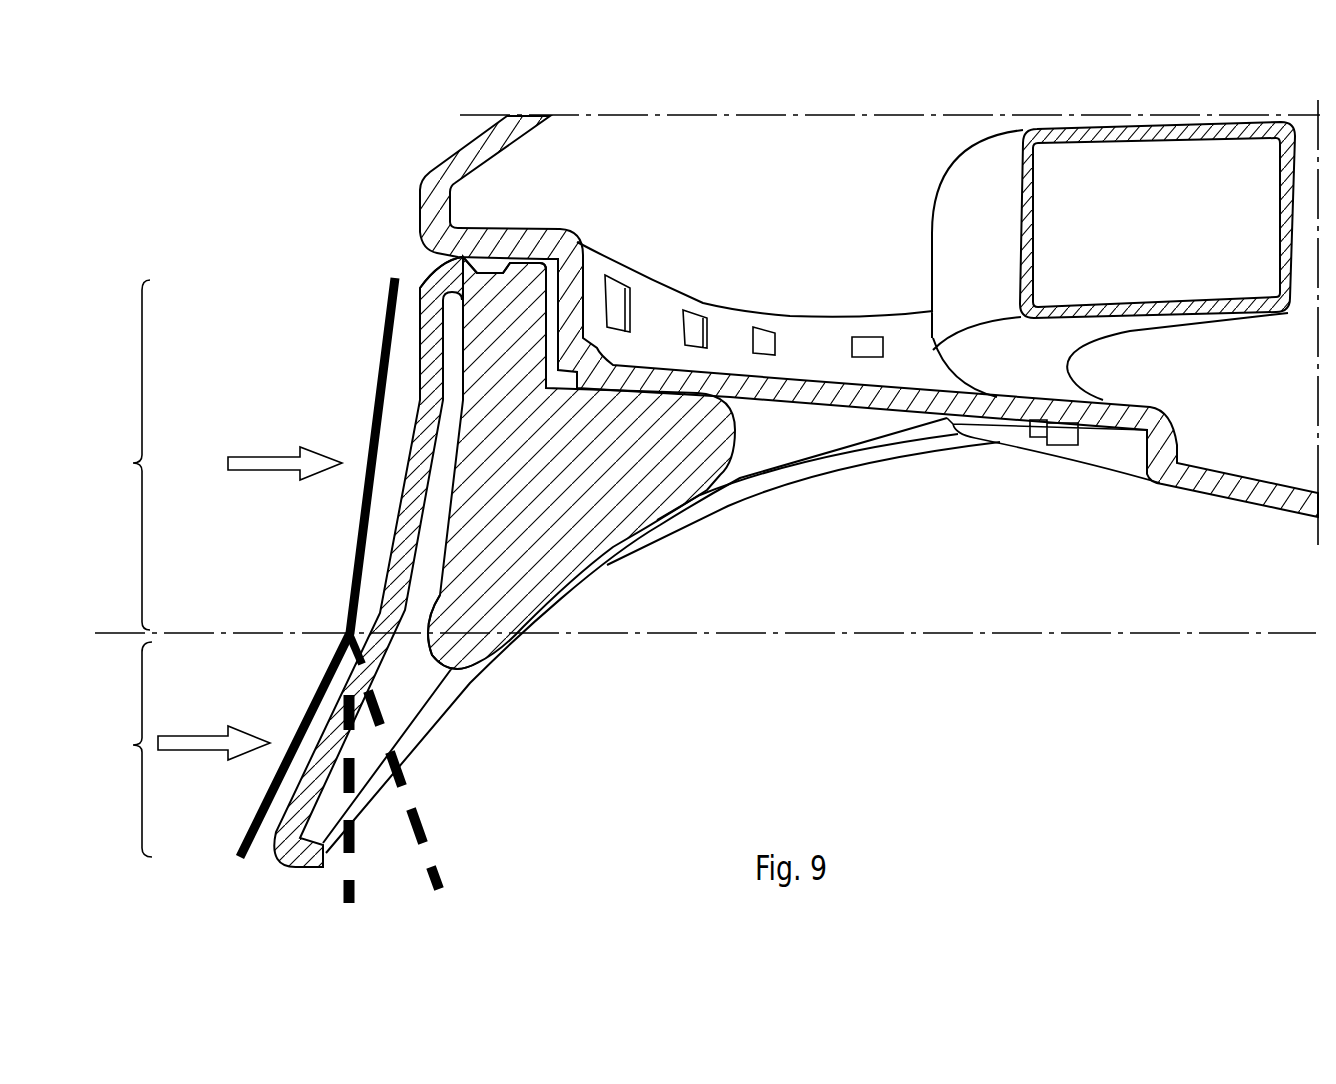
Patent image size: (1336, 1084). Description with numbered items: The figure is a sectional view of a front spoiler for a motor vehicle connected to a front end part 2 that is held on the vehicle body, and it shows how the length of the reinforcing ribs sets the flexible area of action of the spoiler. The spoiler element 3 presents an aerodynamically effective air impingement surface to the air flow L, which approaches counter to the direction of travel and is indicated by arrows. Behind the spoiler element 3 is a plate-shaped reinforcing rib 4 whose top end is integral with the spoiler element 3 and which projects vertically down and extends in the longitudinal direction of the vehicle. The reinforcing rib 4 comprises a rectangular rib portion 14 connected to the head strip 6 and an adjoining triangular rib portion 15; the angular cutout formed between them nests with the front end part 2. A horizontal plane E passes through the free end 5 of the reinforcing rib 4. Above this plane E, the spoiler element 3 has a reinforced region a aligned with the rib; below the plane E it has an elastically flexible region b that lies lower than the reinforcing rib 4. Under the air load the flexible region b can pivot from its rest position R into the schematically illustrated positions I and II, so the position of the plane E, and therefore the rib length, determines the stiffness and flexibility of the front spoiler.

The front end part 2 is at (1272, 497).
The spoiler element 3 is at (428, 368).
The reinforcing rib 4 is at (570, 556).
The free end 5 is at (462, 655).
The head strip 6 is at (453, 273).
The rectangular rib portion 14 is at (511, 346).
The triangular rib portion 15 is at (538, 543).
The rest position R is at (243, 840).
The pivoted position I is at (355, 837).
The pivoted position II is at (423, 830).
The air flow L is at (180, 743).
The horizontal plane E is at (860, 633).
The reinforced region a is at (131, 455).
The flexible region b is at (132, 749).